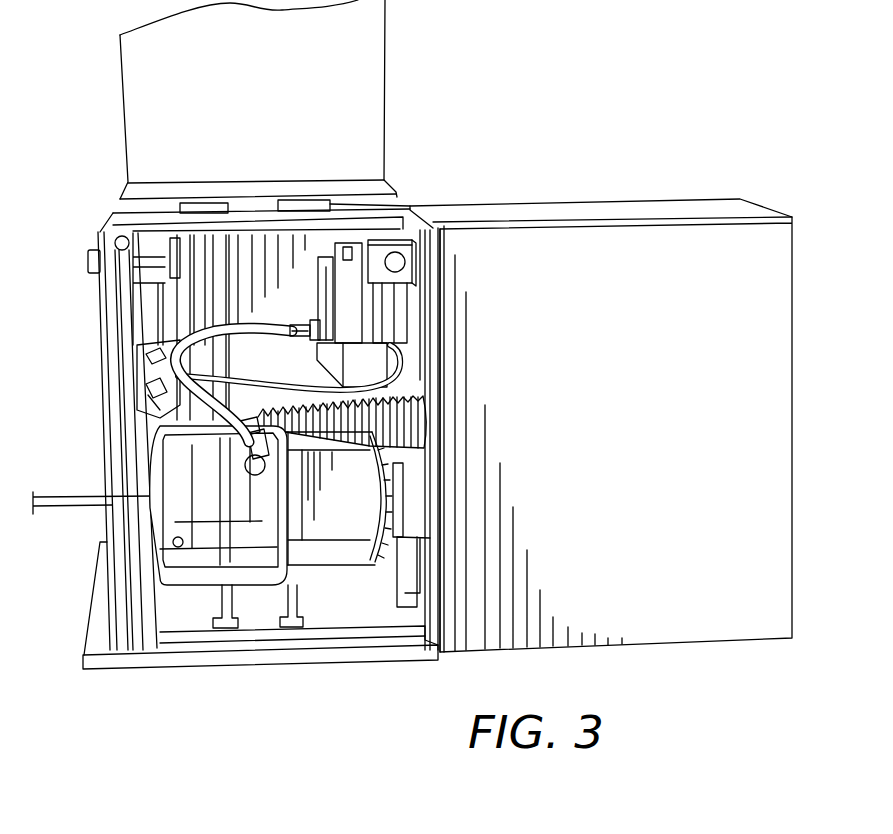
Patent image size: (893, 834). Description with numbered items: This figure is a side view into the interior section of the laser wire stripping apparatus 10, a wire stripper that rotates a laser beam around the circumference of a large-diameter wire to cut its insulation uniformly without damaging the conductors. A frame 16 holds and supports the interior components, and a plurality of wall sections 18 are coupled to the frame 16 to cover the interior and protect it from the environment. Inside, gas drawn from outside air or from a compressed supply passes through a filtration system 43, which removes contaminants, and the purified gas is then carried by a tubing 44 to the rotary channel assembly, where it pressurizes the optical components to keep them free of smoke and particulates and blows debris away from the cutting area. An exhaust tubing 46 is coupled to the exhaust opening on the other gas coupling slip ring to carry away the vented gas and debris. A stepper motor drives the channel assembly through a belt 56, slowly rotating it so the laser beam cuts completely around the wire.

The laser wire stripping apparatus 10 is at (312, 375).
The frame 16 is at (98, 237).
The wall sections 18 is at (668, 200).
The filtration system 43 is at (400, 300).
The tubing 44 is at (220, 390).
The exhaust tubing 46 is at (408, 402).
The belt 56 is at (390, 513).